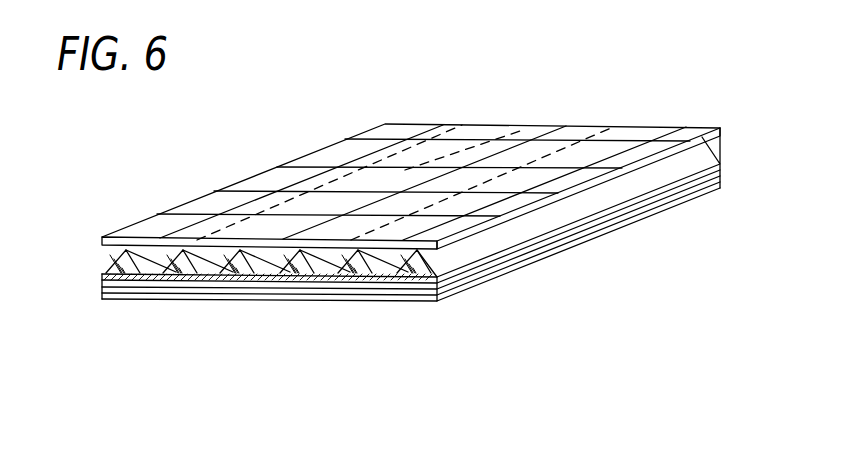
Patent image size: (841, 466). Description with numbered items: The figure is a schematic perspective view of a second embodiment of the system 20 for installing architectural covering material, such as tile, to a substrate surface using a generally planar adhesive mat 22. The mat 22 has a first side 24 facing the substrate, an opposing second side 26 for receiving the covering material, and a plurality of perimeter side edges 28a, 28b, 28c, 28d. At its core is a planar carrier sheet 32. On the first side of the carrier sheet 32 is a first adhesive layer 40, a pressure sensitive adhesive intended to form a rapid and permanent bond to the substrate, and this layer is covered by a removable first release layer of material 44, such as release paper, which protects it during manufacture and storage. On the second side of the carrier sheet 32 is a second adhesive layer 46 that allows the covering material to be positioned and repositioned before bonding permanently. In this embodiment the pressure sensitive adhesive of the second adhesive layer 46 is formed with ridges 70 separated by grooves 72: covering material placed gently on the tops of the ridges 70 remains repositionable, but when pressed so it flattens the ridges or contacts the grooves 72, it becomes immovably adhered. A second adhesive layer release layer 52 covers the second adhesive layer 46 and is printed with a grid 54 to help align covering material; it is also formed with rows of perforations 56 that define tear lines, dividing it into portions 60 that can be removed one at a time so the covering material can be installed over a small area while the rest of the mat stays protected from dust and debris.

The system for installing architectural covering material 20 is at (637, 55).
The adhesive mat 22 is at (605, 259).
The first side 24 is at (227, 300).
The second side 26 is at (527, 133).
The perimeter side edge 28a is at (173, 210).
The perimeter side edge 28b is at (368, 297).
The perimeter side edge 28c is at (483, 278).
The perimeter side edge 28d is at (717, 162).
The carrier sheet 32 is at (102, 282).
The first adhesive layer 40 is at (102, 292).
The first release layer of material 44 is at (110, 302).
The second adhesive layer 46 is at (100, 260).
The second adhesive layer release layer 52 is at (102, 240).
The grid 54 is at (315, 163).
The rows of perforations 56 is at (493, 175).
The portions of the second release layer 60 is at (395, 133).
The ridges 70 is at (373, 263).
The grooves 72 is at (222, 272).